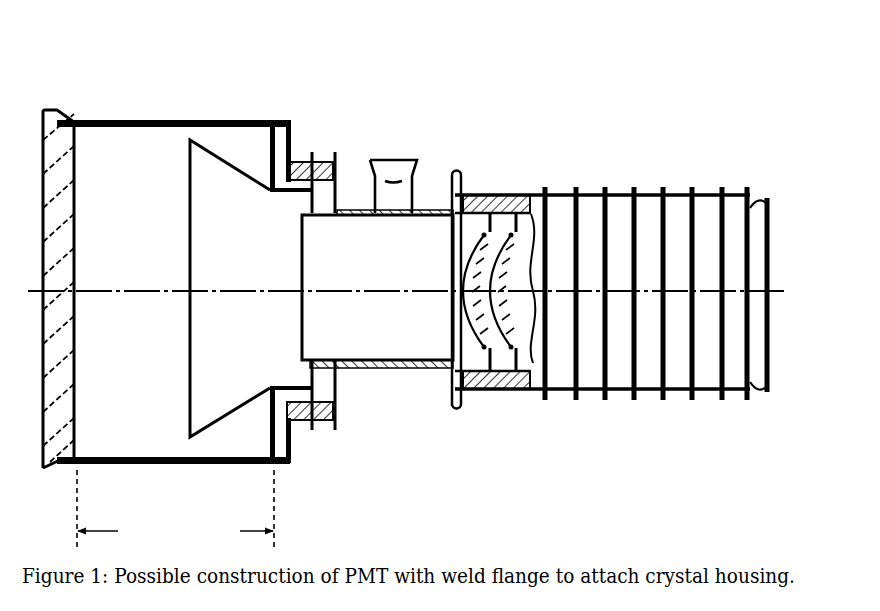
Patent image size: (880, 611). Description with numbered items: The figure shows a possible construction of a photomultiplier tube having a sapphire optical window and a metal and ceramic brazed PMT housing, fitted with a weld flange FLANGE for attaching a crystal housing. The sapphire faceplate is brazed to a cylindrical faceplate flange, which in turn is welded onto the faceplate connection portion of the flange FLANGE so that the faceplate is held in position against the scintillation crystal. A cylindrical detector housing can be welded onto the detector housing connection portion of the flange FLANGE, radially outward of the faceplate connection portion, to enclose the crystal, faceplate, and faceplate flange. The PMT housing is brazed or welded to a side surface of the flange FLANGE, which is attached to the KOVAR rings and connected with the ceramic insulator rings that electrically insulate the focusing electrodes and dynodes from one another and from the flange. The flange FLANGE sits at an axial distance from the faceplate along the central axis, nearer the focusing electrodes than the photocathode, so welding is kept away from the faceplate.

The flange FLANGE is at (300, 143).